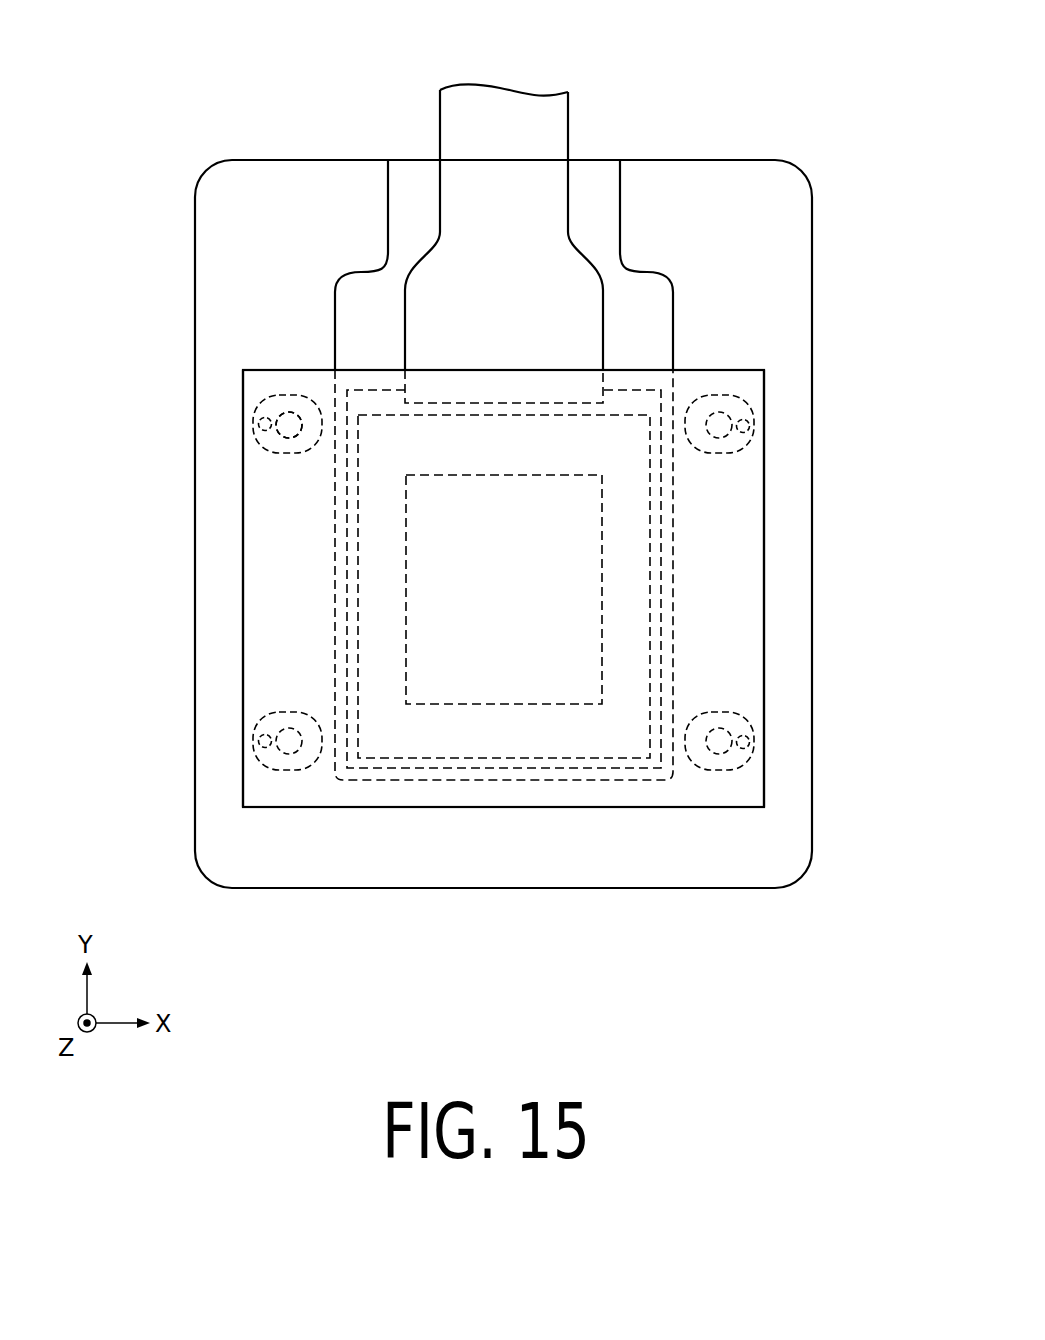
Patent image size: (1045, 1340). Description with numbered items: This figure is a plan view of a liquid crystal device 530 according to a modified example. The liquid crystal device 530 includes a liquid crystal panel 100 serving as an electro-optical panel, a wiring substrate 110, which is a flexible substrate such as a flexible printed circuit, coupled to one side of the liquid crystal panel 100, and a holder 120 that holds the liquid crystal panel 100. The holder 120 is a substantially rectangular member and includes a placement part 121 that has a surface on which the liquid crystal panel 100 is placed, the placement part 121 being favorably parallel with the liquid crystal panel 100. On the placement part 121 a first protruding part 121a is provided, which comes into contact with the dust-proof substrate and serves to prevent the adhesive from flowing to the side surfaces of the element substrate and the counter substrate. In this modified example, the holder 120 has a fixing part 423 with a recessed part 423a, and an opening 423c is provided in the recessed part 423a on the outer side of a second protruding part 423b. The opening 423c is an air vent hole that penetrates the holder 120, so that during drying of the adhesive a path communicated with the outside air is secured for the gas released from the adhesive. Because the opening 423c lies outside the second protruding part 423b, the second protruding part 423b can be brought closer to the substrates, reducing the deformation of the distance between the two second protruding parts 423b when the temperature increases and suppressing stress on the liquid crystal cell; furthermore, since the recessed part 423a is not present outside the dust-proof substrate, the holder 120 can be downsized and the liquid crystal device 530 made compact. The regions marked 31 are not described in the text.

The liquid crystal device 530 is at (880, 42).
The wiring substrate 110 is at (568, 118).
The liquid crystal panel 100 is at (764, 521).
The holder 120 is at (812, 624).
The placement part 121 is at (302, 610).
The first protruding part 121a is at (340, 434).
The fixing part 423 is at (270, 458).
The recessed part 423a is at (289, 442).
The second protruding part 423b is at (295, 412).
The opening 423c is at (258, 417).
The side region 31 is at (345, 815).